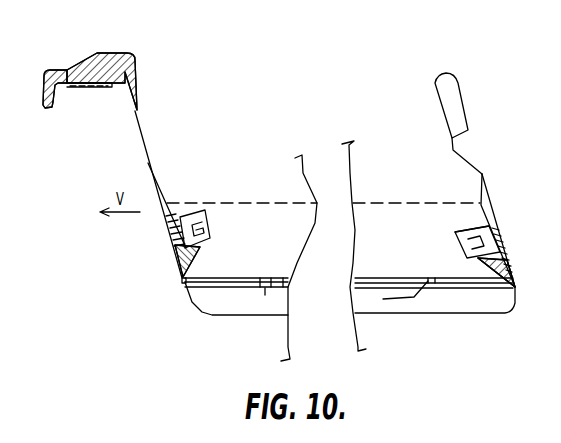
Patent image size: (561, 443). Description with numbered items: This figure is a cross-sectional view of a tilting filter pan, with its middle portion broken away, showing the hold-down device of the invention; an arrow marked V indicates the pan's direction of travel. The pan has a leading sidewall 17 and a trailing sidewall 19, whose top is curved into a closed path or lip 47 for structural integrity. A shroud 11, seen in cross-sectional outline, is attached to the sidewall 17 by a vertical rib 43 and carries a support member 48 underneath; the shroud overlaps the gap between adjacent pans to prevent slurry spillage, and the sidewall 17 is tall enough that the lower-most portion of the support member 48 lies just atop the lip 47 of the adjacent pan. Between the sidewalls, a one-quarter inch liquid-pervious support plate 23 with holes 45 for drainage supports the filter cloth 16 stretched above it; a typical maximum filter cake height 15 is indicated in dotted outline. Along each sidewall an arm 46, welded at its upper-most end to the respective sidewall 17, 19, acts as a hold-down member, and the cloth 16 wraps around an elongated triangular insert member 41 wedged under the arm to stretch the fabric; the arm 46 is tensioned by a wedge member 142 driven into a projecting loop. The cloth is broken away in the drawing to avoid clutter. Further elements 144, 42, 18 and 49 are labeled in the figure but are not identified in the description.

The shroud 11 is at (66, 68).
The vertical rib 43 is at (114, 52).
The support member 48 is at (96, 88).
The sidewall 17 is at (150, 170).
The arm 46 is at (163, 202).
The maximum filter cake height 15 is at (197, 202).
The latch box 144 is at (206, 218).
The wedge member 142 is at (476, 227).
The elongated triangular insert member 41 is at (178, 263).
The foot reinforcement edge 42 is at (502, 248).
The trailing sidewall 19 is at (488, 194).
The lip 47 is at (468, 118).
The base 18 is at (210, 316).
The filter cloth 16 is at (235, 278).
The support plate 23 is at (279, 278).
The holes 45 is at (343, 296).
The stop 49 is at (183, 287).